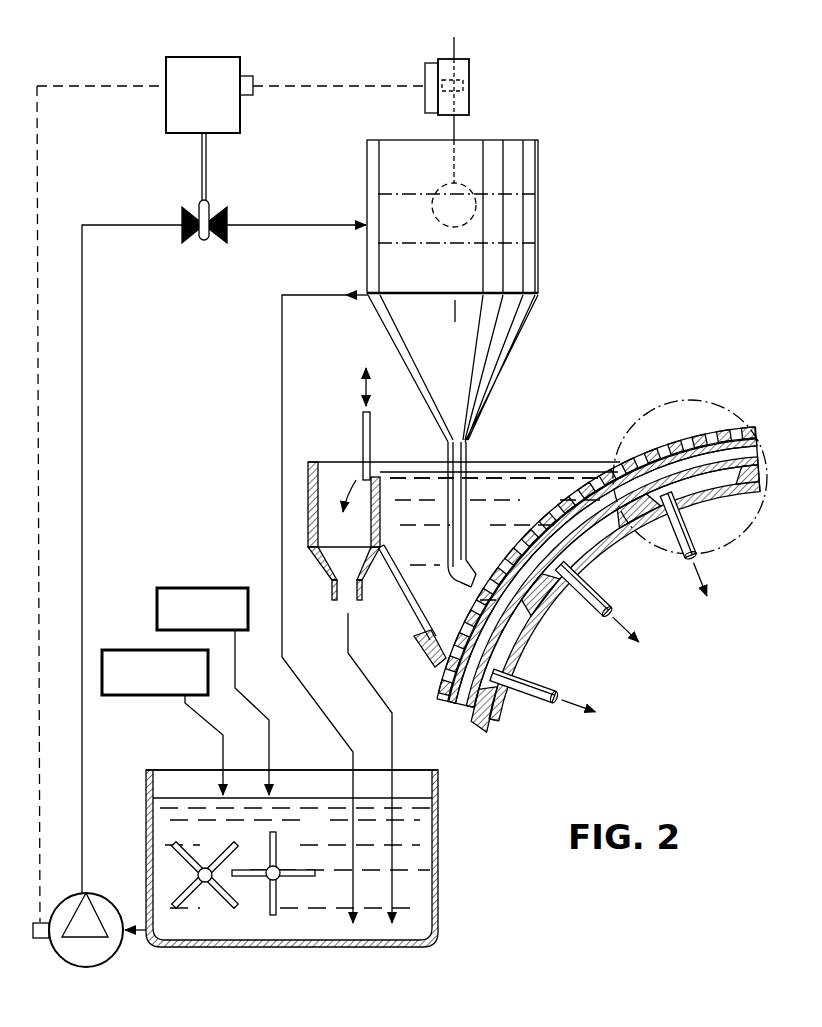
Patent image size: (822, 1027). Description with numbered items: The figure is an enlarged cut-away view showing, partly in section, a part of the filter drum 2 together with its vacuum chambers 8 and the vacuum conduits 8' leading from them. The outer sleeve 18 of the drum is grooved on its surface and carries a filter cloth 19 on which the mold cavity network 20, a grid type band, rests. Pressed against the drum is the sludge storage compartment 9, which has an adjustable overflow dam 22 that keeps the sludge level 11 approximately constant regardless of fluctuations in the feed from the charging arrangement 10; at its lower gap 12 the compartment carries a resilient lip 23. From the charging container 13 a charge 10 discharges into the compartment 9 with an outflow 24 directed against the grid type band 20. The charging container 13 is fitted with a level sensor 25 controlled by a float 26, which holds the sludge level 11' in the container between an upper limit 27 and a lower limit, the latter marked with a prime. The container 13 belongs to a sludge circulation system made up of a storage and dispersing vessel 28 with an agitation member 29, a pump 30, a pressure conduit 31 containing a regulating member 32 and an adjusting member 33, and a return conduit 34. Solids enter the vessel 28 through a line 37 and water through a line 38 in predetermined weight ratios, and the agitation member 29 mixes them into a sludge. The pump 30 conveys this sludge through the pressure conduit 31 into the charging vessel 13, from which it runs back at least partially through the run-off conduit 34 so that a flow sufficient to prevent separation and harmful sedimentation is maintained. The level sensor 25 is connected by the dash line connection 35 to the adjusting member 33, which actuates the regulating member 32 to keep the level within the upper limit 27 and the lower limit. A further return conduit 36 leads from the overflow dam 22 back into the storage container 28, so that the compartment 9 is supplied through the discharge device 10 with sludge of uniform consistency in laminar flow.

The filter drum 2 is at (670, 606).
The vacuum chambers 8 is at (615, 598).
The vacuum conduits 8' is at (618, 602).
The sludge storage compartment 9 is at (416, 487).
The charging arrangement 10 is at (470, 487).
The sludge level 11 is at (495, 444).
The sludge level in charging container 11' is at (500, 192).
The lower gap 12 is at (437, 634).
The charging container 13 is at (520, 318).
The outer sleeve 18 is at (612, 582).
The filter cloth 19 is at (752, 437).
The mold cavity network 20 is at (733, 427).
The adjustable overflow dam 22 is at (371, 472).
The resilient lip 23 is at (433, 664).
The outflow 24 is at (470, 585).
The level sensor 25 is at (470, 68).
The float 26 is at (437, 211).
The upper limit 27 is at (380, 195).
The storage and dispersing vessel 28 is at (323, 805).
The agitation member 29 is at (273, 915).
The pump 30 is at (108, 948).
The pressure conduit 31 is at (115, 225).
The regulating member 32 is at (205, 243).
The adjusting member 33 is at (201, 72).
The return conduit 34 is at (282, 373).
The dash line connection 35 is at (331, 86).
The return conduit from overflow dam 36 is at (393, 743).
The solids line 37 is at (204, 723).
The water line 38 is at (272, 743).